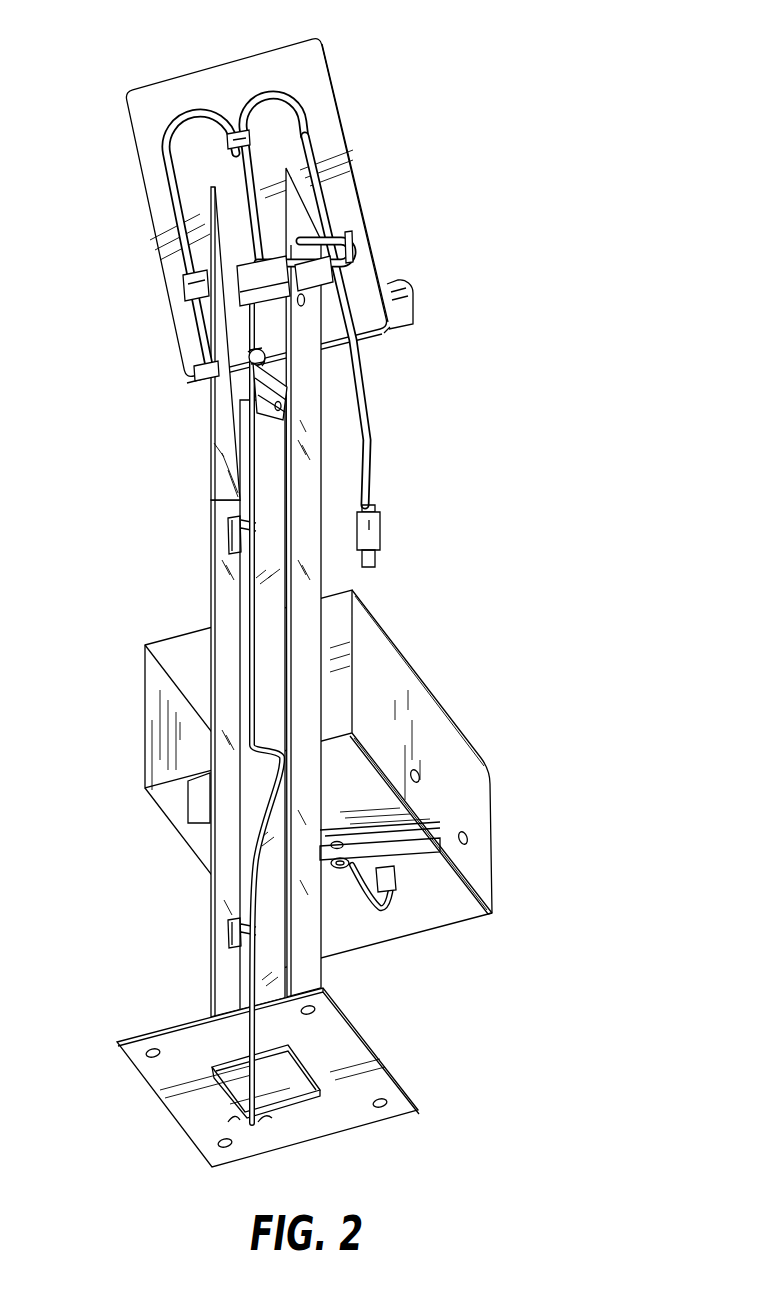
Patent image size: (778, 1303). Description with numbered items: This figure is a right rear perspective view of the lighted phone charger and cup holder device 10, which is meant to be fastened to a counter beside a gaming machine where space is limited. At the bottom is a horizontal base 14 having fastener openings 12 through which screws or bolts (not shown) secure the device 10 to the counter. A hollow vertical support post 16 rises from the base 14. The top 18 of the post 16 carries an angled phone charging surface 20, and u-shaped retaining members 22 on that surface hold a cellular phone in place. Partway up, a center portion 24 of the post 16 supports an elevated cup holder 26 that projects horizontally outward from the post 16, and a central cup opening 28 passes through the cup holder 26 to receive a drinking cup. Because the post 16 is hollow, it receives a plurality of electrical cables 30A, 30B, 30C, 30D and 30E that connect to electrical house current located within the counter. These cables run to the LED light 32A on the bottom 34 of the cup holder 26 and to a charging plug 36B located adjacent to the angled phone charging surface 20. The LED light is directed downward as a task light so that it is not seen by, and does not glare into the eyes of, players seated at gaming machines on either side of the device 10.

The lighted phone charger and cup holder device 10 is at (527, 88).
The fastener openings 12 is at (317, 1013).
The horizontal base 14 is at (357, 1113).
The hollow vertical support post 16 is at (207, 554).
The top of the post 18 is at (221, 260).
The angled phone charging surface 20 is at (318, 74).
The u-shaped retaining members 22 is at (413, 303).
The center portion of the post 24 is at (310, 579).
The elevated cup holder 26 is at (448, 735).
The central cup opening 28 is at (333, 695).
The electrical cable 30A is at (265, 820).
The electrical cable 30B is at (390, 900).
The electrical cable 30C is at (168, 165).
The electrical cable 30D is at (247, 142).
The cable clamp 30E is at (245, 358).
The fastener 32A is at (342, 872).
The bottom of the cup holder 34 is at (413, 842).
The charging plug 36B is at (382, 530).